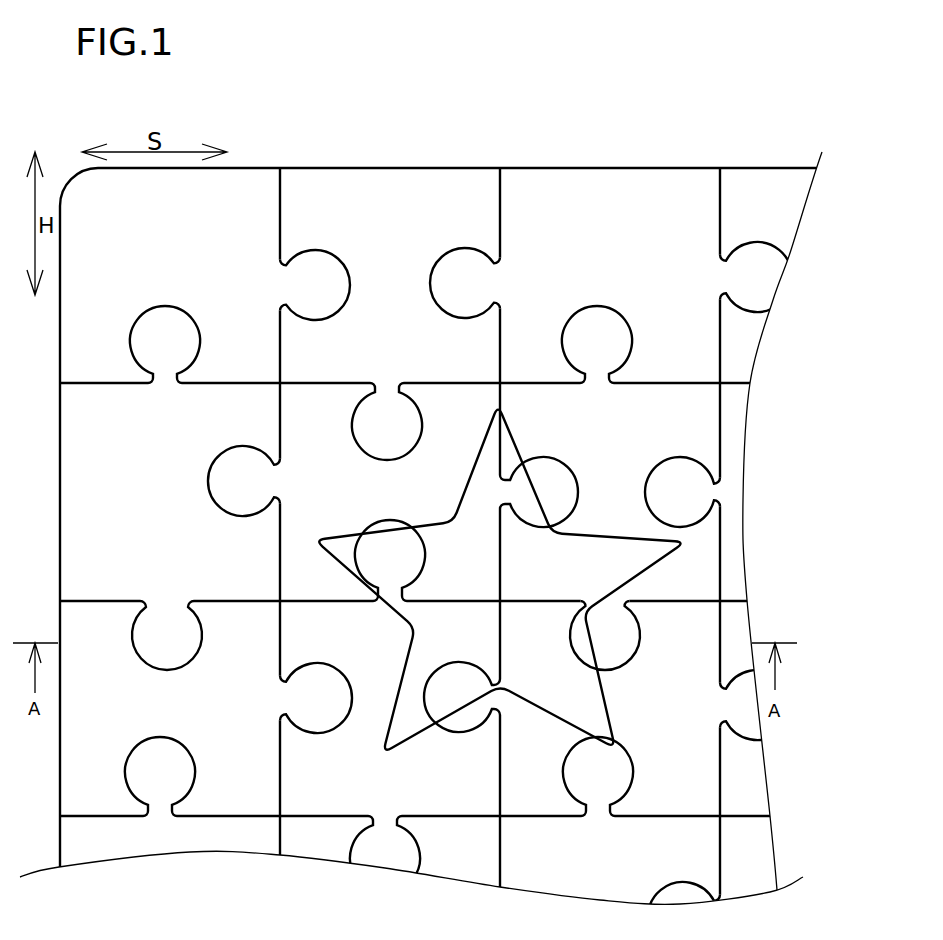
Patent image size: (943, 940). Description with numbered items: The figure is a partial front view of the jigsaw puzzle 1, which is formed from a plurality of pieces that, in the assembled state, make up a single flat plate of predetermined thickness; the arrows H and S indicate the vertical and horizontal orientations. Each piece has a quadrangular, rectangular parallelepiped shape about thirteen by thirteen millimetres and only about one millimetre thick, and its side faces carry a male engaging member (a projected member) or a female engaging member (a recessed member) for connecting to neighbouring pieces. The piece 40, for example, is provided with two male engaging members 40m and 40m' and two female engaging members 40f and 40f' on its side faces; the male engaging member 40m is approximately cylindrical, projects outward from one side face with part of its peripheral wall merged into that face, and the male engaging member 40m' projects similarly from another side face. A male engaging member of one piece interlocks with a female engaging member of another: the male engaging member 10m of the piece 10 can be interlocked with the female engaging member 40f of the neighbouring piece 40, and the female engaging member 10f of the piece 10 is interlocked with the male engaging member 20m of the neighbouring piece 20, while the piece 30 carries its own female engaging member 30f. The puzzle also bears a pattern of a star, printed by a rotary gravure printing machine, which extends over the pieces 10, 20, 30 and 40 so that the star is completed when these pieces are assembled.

The jigsaw puzzle 1 is at (627, 152).
The piece 10 is at (323, 580).
The piece 20 is at (322, 773).
The piece 30 is at (540, 772).
The piece 40 is at (540, 580).
The female engaging member 10f is at (382, 537).
The male engaging member 10m is at (553, 495).
The male engaging member 20m is at (410, 553).
The female engaging member 30f is at (597, 633).
The female engaging member 40f is at (556, 439).
The female engaging member 40f' is at (682, 467).
The male engaging member 40m is at (633, 635).
The male engaging member 40m' is at (620, 337).